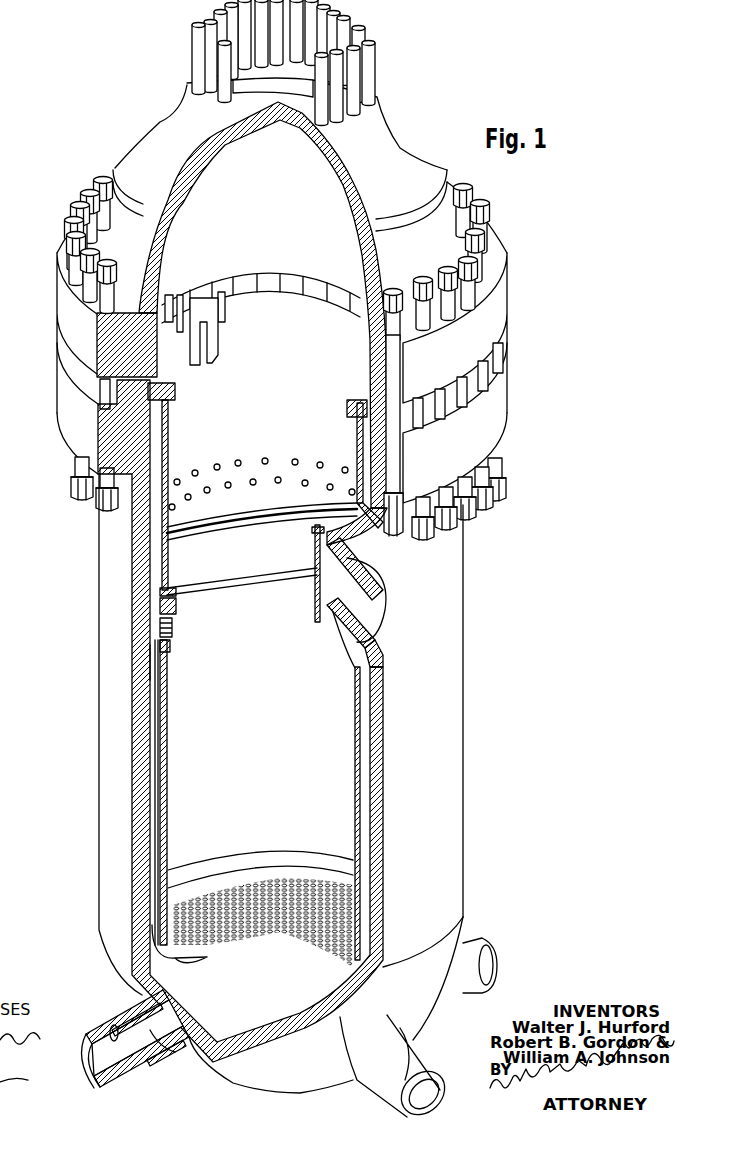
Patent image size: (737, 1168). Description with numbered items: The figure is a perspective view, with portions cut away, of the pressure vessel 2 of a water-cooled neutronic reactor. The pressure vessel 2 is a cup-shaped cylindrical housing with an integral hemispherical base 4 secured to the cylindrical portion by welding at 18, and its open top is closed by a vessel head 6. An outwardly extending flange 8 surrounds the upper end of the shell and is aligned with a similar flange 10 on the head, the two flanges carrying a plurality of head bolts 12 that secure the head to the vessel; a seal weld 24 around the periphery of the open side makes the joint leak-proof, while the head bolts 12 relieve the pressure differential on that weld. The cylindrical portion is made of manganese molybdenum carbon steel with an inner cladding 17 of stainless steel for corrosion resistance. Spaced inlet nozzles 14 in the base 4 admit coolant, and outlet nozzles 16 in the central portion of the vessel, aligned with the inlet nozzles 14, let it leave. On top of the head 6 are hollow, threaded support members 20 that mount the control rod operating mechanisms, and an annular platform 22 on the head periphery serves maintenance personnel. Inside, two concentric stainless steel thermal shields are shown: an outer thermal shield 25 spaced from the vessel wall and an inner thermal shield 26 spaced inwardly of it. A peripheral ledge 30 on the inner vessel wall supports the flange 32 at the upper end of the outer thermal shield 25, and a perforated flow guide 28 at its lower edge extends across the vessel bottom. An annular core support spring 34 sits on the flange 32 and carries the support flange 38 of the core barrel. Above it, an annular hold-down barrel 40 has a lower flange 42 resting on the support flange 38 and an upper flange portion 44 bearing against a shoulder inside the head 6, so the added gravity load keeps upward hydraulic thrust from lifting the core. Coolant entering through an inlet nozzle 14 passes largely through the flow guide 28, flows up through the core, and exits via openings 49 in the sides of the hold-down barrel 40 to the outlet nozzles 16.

The pressure vessel 2 is at (463, 578).
The hemispherical base 4 is at (238, 1078).
The vessel head 6 is at (380, 135).
The vessel flange 8 is at (72, 430).
The head flange 10 is at (70, 323).
The head bolts 12 is at (107, 298).
The inlet nozzles 14 is at (80, 1042).
The outlet nozzles 16 is at (377, 590).
The inner cladding 17 is at (227, 1050).
The weld 18 is at (460, 918).
The support members 20 is at (363, 77).
The annular platform 22 is at (133, 178).
The seal weld 24 is at (147, 378).
The outer thermal shield 25 is at (158, 792).
The inner thermal shield 26 is at (167, 815).
The perforated flow guide 28 is at (249, 940).
The peripheral ledge 30 is at (150, 657).
The flange 32 is at (170, 650).
The annular core support spring 34 is at (172, 633).
The support flange 38 is at (176, 605).
The hold-down barrel 40 is at (167, 467).
The flange 42 is at (177, 590).
The flange portion 44 is at (156, 386).
The openings 49 is at (266, 459).